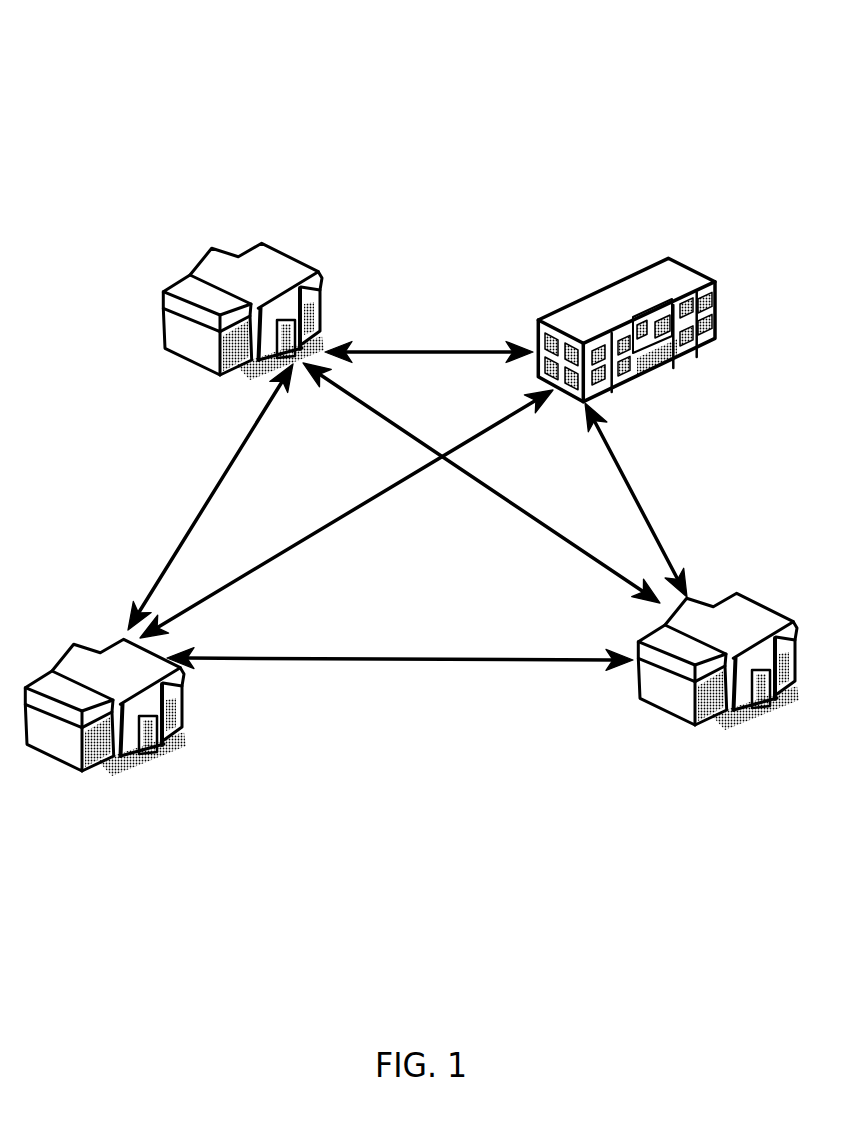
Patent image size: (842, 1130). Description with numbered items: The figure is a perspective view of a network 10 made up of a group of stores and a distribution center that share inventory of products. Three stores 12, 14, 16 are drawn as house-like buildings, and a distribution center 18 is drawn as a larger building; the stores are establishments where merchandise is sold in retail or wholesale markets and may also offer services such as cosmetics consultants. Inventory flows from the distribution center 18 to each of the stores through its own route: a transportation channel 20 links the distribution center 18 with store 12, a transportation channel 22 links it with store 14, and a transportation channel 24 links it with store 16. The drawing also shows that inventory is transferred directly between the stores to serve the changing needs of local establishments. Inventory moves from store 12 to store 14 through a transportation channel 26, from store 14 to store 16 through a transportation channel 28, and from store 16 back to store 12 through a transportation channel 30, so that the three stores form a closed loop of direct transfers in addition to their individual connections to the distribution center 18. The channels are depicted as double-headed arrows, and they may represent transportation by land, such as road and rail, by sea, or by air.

The network 10 is at (630, 65).
The store 12 is at (297, 288).
The store 14 is at (167, 753).
The store 16 is at (665, 710).
The distribution center 18 is at (637, 272).
The transportation channel 20 is at (465, 350).
The transportation channel 22 is at (503, 415).
The transportation channel 24 is at (625, 464).
The transportation channel 26 is at (247, 437).
The transportation channel 28 is at (343, 660).
The transportation channel 30 is at (365, 400).